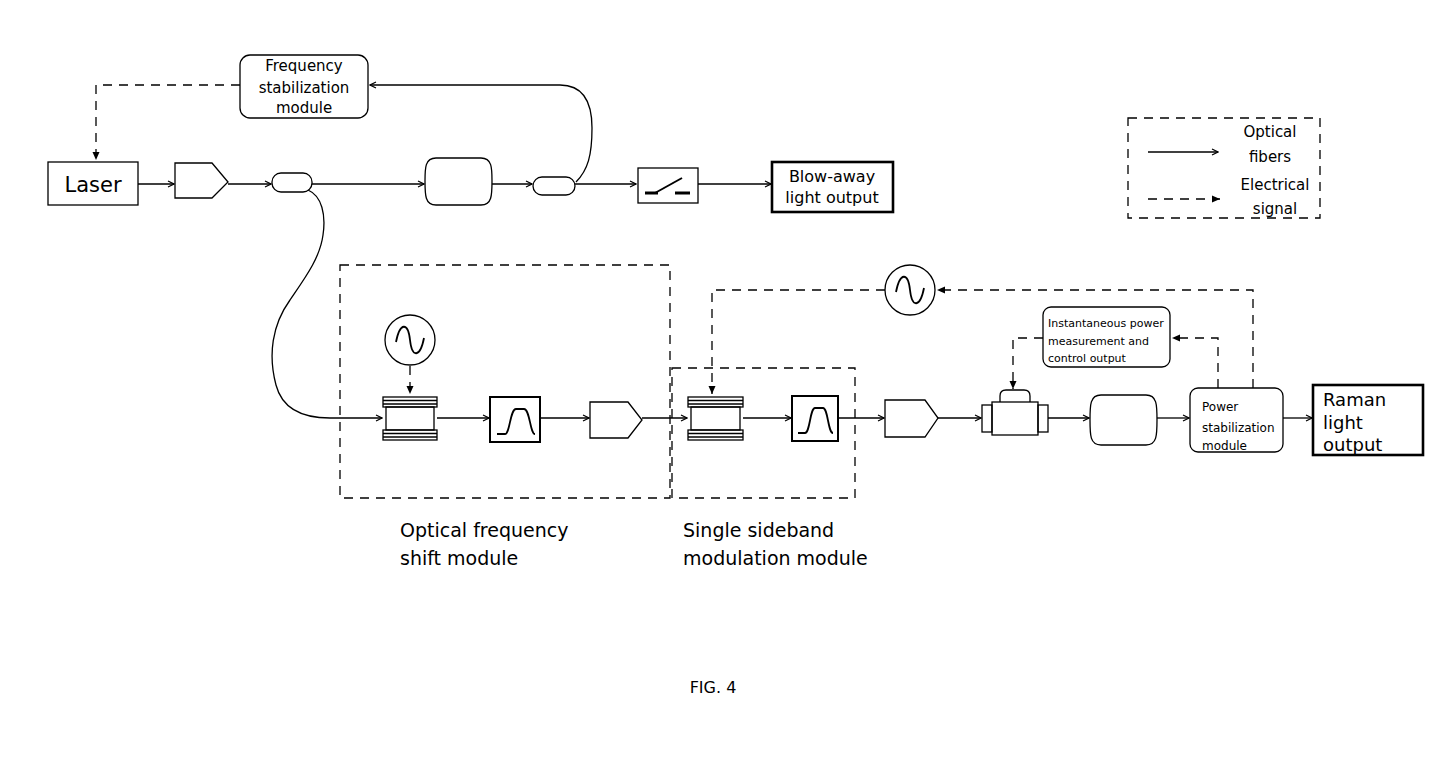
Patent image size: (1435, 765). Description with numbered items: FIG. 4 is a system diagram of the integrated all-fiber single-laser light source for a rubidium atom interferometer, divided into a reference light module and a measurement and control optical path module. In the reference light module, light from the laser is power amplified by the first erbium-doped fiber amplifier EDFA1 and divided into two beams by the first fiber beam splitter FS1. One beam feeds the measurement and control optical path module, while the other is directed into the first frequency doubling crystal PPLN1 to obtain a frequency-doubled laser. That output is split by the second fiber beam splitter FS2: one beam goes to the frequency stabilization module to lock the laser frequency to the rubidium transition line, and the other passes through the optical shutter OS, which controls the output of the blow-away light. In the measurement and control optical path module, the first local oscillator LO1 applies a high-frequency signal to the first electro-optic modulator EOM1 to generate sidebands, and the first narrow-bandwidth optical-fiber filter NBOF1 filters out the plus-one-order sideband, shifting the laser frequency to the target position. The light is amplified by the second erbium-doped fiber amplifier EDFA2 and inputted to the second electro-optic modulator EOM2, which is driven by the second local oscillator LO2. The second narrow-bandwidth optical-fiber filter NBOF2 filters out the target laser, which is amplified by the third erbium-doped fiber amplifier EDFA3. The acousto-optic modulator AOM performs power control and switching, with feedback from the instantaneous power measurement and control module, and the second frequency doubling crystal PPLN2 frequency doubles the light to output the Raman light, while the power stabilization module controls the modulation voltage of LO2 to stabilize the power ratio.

The first erbium-doped fiber amplifier EDFA1 is at (201, 196).
The first fiber beam splitter FS1 is at (292, 194).
The first frequency doubling crystal PPLN1 is at (458, 195).
The second fiber beam splitter FS2 is at (554, 196).
The optical shutter OS is at (668, 200).
The first local oscillator LO1 is at (410, 342).
The first electro-optic modulator EOM1 is at (410, 435).
The first narrow-bandwidth optical-fiber filter NBOF1 is at (515, 435).
The second erbium-doped fiber amplifier EDFA2 is at (616, 437).
The second electro-optic modulator EOM2 is at (715, 435).
The second narrow-bandwidth optical-fiber filter NBOF2 is at (815, 434).
The third erbium-doped fiber amplifier EDFA3 is at (911, 436).
The acousto-optic modulator AOM is at (1015, 431).
The second frequency doubling crystal PPLN2 is at (1123, 434).
The second local oscillator LO2 is at (910, 277).